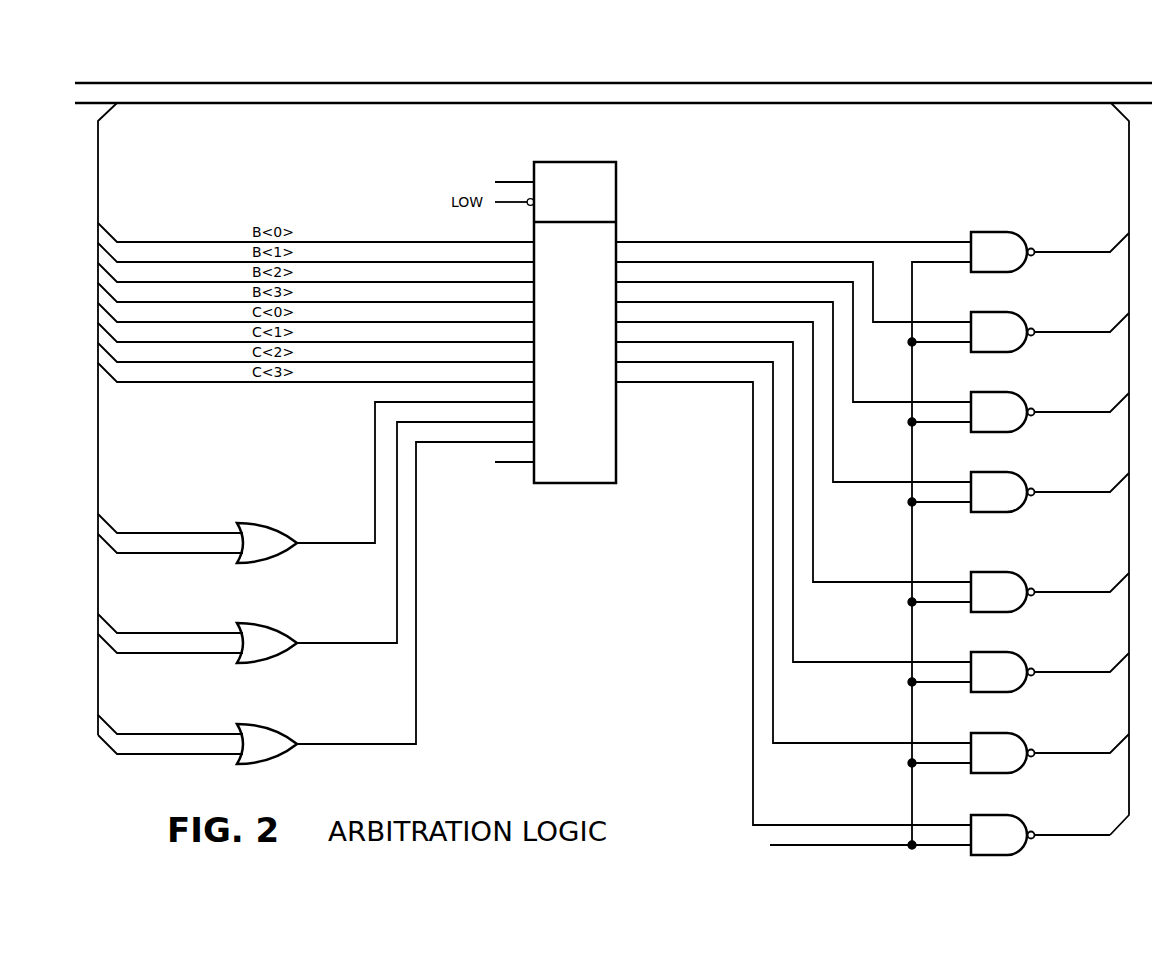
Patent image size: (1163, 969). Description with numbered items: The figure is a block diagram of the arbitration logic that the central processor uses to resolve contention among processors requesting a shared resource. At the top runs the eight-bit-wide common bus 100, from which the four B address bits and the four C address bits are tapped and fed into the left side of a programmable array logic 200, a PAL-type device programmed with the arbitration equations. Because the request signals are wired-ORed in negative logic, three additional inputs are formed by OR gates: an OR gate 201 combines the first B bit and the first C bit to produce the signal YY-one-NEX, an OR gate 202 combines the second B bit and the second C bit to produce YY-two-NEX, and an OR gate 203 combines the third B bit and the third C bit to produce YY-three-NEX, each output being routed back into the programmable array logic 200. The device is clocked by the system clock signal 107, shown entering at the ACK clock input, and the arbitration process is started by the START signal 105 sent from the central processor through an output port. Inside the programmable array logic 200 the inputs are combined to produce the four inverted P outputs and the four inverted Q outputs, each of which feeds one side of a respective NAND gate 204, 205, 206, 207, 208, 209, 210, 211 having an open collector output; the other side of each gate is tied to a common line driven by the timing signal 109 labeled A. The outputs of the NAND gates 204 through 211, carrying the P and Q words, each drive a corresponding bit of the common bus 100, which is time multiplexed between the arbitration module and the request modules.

The common bus 100 is at (825, 93).
The START signal 105 is at (525, 463).
The system clock signal 107 is at (500, 182).
The system clock signal 109 is at (803, 843).
The programmable array logic 200 is at (593, 412).
The OR gate 201 is at (257, 532).
The OR gate 202 is at (257, 632).
The OR gate 203 is at (257, 735).
The NAND gate 204 is at (995, 250).
The NAND gate 205 is at (995, 327).
The NAND gate 206 is at (995, 405).
The NAND gate 207 is at (995, 488).
The NAND gate 208 is at (995, 588).
The NAND gate 209 is at (995, 668).
The NAND gate 210 is at (995, 748).
The NAND gate 211 is at (995, 830).